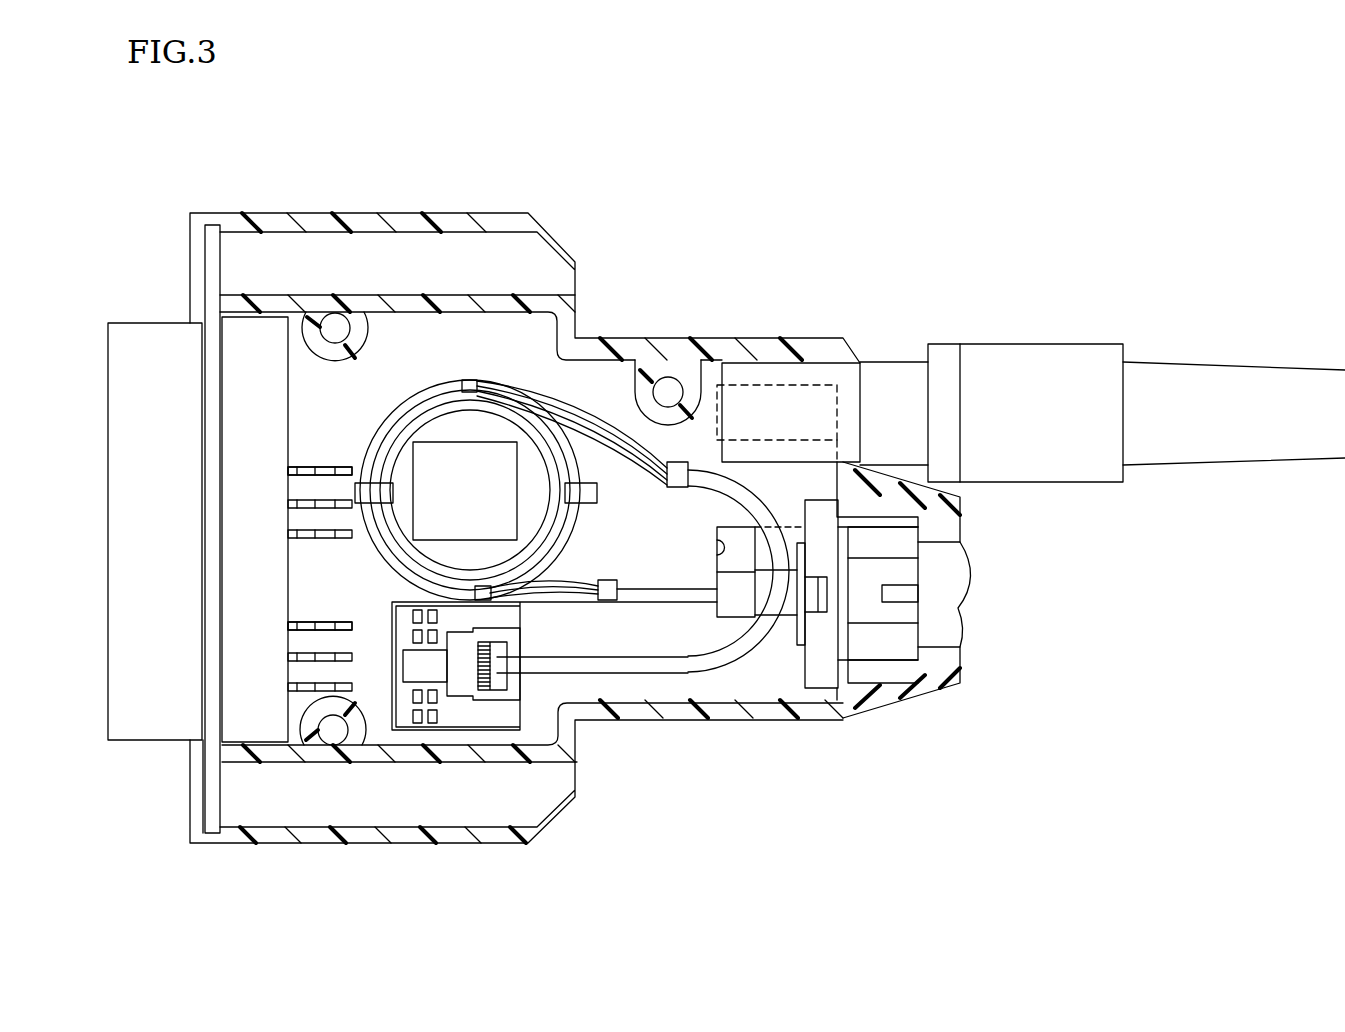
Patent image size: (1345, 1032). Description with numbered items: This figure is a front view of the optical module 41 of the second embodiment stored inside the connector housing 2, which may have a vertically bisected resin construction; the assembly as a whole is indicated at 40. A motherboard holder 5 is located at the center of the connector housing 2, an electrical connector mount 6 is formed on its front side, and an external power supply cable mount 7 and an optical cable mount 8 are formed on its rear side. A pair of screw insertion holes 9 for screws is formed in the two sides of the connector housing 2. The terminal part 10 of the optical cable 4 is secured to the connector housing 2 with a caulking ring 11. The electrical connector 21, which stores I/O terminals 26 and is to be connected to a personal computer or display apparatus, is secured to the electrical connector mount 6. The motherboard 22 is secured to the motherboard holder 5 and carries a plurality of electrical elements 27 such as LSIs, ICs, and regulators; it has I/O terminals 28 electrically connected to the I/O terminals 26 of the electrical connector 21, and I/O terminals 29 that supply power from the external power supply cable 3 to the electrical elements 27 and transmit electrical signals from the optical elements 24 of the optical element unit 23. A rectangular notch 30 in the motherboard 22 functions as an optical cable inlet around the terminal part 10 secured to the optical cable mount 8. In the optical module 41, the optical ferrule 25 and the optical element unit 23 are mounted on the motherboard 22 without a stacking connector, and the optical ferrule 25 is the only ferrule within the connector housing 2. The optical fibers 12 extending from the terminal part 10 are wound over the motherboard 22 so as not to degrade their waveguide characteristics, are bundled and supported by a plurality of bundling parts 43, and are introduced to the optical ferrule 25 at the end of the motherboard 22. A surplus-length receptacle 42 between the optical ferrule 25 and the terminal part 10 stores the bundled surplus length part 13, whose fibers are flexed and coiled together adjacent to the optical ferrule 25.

The connector housing 2 is at (262, 213).
The external power supply cable 3 is at (1068, 344).
The optical cable 4 is at (947, 640).
The motherboard holder 5 is at (527, 318).
The electrical connector mount 6 is at (205, 237).
The external power supply cable mount 7 is at (875, 363).
The optical cable mount 8 is at (900, 640).
The screw insertion holes 9 is at (450, 235).
The terminal part 10 is at (790, 575).
The caulking ring 11 is at (820, 652).
The optical fibers 12 is at (640, 660).
The bundled surplus length part 13 is at (398, 410).
The electrical connector 21 is at (140, 323).
The motherboard 22 is at (636, 362).
The optical element unit 23 is at (378, 627).
The optical elements 24 is at (405, 665).
The optical ferrule 25 is at (519, 633).
The I/O terminals 26 is at (288, 470).
The electrical elements 27 is at (482, 442).
The I/O terminals 28 is at (325, 467).
The I/O terminals 29 is at (413, 714).
The rectangular notch 30 is at (717, 548).
The cable assembly 40 is at (815, 205).
The optical module 41 is at (630, 545).
The surplus-length receptacle 42 is at (497, 420).
The bundling parts 43 is at (462, 384).